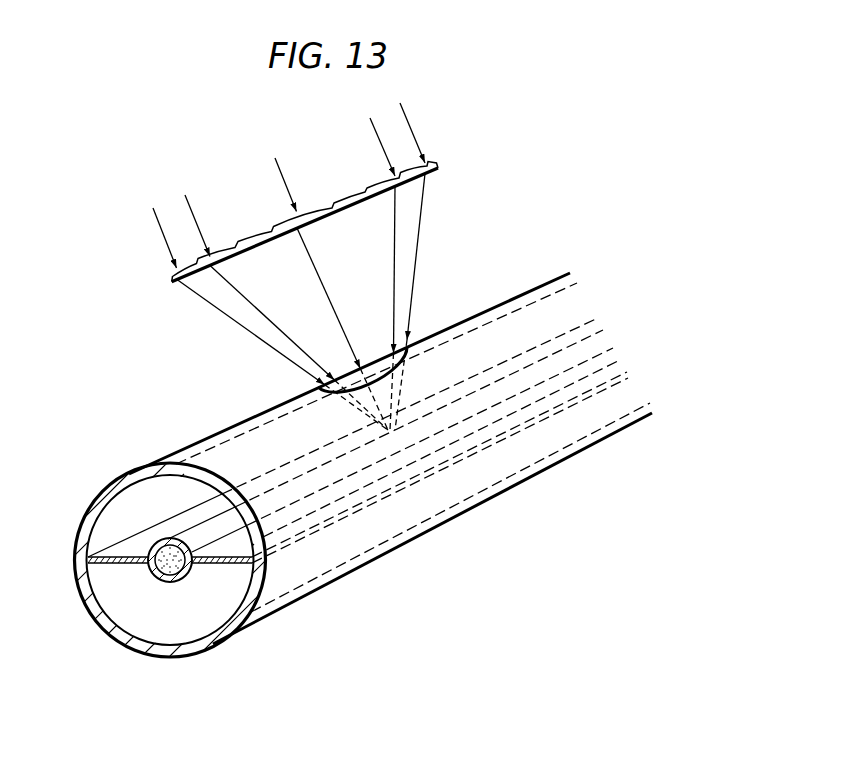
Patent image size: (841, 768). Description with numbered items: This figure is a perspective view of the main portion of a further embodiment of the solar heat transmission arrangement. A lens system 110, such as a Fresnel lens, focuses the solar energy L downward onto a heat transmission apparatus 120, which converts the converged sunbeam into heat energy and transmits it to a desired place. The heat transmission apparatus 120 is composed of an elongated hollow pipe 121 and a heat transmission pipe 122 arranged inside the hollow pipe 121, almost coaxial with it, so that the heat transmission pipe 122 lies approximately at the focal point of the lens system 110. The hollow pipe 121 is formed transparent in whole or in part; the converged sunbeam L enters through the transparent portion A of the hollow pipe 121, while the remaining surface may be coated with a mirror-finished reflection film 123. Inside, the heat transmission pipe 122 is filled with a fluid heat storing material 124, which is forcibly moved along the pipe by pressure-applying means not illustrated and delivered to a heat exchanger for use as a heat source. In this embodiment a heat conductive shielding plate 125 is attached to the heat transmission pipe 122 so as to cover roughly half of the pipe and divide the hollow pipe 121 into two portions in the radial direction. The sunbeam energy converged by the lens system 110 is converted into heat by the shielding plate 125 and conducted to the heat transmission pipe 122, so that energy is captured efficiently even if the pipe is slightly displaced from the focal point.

The lens system 110 is at (343, 194).
The heat transmission apparatus 120 is at (344, 580).
The hollow pipe 121 is at (170, 653).
The heat transmission pipe 122 is at (158, 580).
The mirror-finished reflection film 123 is at (88, 613).
The fluid heat storing material 124 is at (183, 578).
The heat conductive shielding plate 125 is at (142, 555).
The solar energy L is at (289, 266).
The transparent portion A is at (378, 360).